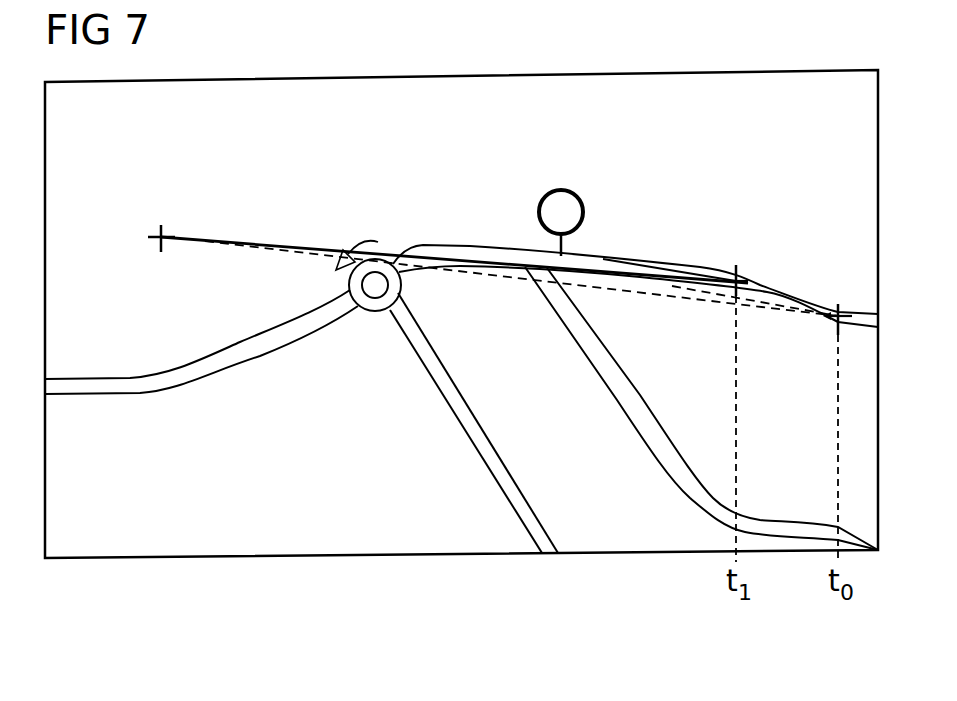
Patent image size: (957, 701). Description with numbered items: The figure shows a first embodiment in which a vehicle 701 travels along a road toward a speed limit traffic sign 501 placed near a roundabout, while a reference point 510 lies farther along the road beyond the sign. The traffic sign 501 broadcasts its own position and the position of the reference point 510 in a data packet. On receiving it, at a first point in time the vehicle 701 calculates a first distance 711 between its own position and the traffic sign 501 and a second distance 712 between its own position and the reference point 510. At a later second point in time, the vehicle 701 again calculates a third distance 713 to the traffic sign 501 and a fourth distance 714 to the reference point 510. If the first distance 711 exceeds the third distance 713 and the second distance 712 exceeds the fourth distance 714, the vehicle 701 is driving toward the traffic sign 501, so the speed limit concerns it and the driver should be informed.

The speed limit traffic sign 501 is at (561, 190).
The reference point 510 is at (164, 237).
The vehicle 701 is at (736, 266).
The first distance 711 is at (762, 295).
The second distance 712 is at (501, 284).
The third distance 713 is at (622, 259).
The fourth distance 714 is at (328, 245).